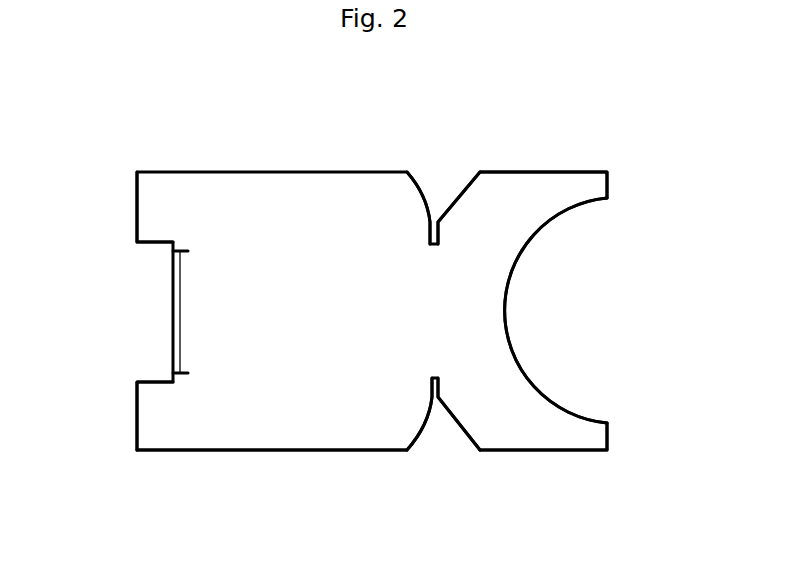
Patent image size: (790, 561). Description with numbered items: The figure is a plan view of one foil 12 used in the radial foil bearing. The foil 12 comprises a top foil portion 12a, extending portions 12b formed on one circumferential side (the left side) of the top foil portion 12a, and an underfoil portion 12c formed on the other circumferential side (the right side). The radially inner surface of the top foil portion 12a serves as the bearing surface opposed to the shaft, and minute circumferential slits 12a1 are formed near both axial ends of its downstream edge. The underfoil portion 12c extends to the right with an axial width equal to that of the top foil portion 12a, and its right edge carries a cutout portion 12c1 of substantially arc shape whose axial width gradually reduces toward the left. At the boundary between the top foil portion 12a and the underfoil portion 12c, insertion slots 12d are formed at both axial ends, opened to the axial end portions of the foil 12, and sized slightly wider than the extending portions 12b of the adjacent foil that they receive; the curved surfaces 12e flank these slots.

The foil 12 is at (486, 149).
The top foil portion 12a is at (262, 410).
The extending portions 12b is at (153, 205).
The slits 12a1 is at (173, 327).
The underfoil portion 12c is at (527, 427).
The cutout portion 12c1 is at (522, 378).
The insertion slots 12d is at (443, 187).
The curved surface of notch 12e is at (425, 190).